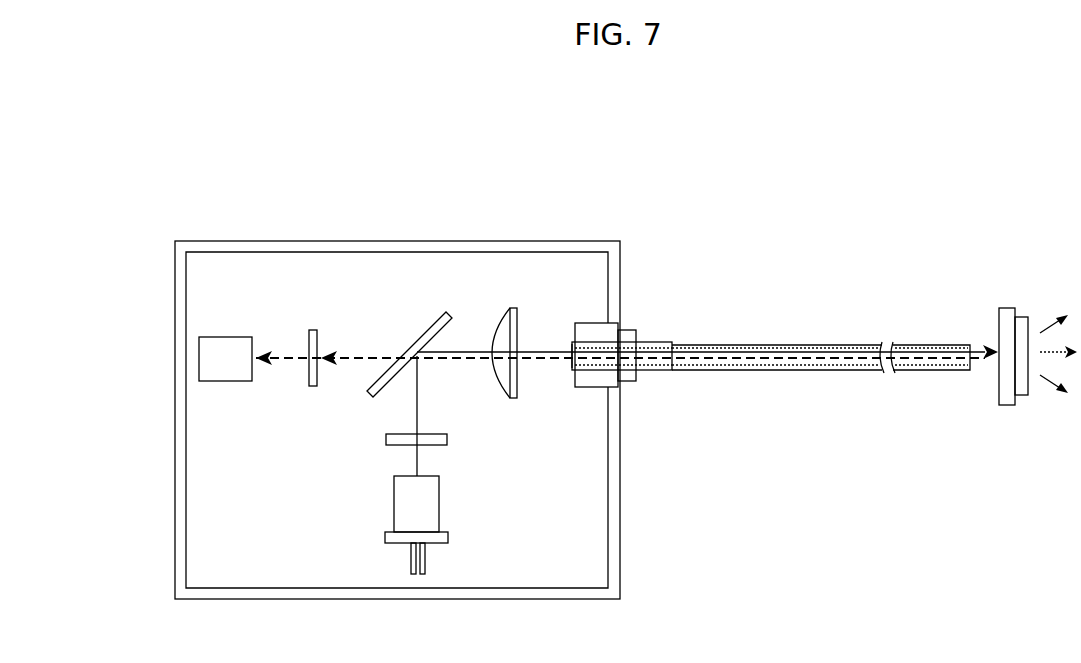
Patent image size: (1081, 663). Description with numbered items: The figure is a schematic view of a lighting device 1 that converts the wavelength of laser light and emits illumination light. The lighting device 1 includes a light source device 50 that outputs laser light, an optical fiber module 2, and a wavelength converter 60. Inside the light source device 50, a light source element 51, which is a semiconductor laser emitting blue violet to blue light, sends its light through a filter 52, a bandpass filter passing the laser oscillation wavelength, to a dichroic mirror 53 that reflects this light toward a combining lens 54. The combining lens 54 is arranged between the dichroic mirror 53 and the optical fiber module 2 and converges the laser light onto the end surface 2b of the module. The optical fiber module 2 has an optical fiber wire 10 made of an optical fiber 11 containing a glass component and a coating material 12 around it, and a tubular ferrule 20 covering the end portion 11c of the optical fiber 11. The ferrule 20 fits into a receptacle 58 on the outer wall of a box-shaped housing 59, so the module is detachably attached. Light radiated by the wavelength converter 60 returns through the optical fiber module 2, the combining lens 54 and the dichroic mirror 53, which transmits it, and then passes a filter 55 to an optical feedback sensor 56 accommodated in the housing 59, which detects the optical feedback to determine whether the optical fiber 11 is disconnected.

The lighting device 1 is at (230, 124).
The light source device 50 is at (186, 236).
The optical feedback sensor 56 is at (222, 337).
The filter 55 is at (313, 330).
The dichroic mirror 53 is at (444, 313).
The combining lens 54 is at (494, 320).
The filter 52 is at (387, 440).
The light source element 51 is at (394, 505).
The receptacle 58 is at (595, 323).
The housing 59 is at (608, 322).
The optical fiber module 2 is at (781, 141).
The end surface 2b is at (572, 343).
The ferrule 20 is at (628, 343).
The optical fiber wire 10 is at (818, 181).
The optical fiber 11 is at (718, 345).
The coating material 12 is at (783, 345).
The end portion 11c is at (568, 398).
The wavelength converter 60 is at (1021, 317).